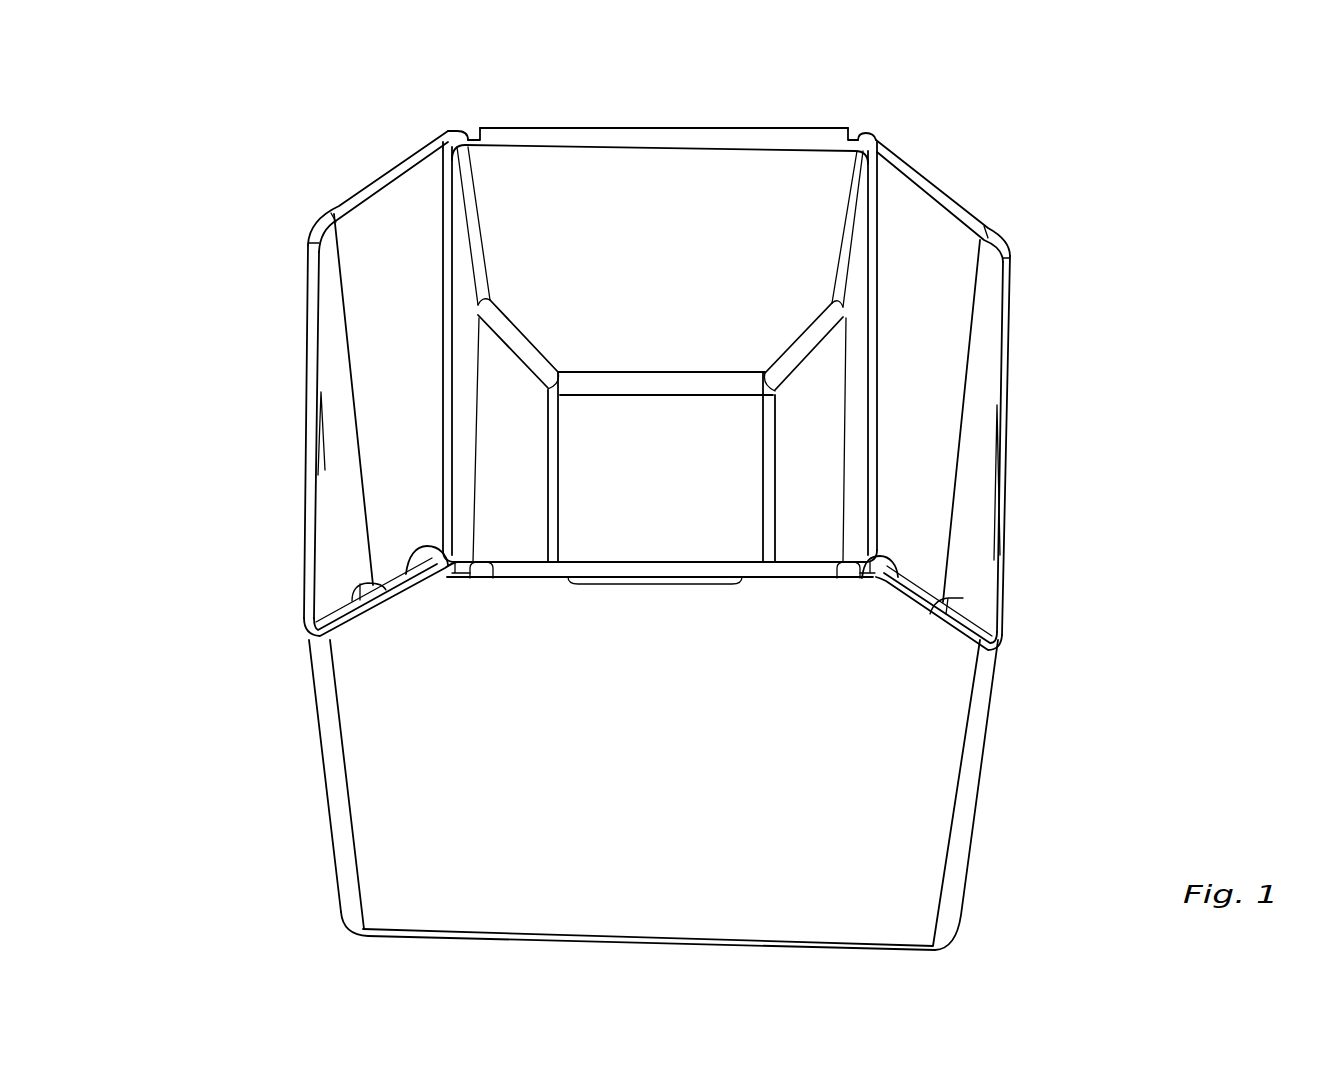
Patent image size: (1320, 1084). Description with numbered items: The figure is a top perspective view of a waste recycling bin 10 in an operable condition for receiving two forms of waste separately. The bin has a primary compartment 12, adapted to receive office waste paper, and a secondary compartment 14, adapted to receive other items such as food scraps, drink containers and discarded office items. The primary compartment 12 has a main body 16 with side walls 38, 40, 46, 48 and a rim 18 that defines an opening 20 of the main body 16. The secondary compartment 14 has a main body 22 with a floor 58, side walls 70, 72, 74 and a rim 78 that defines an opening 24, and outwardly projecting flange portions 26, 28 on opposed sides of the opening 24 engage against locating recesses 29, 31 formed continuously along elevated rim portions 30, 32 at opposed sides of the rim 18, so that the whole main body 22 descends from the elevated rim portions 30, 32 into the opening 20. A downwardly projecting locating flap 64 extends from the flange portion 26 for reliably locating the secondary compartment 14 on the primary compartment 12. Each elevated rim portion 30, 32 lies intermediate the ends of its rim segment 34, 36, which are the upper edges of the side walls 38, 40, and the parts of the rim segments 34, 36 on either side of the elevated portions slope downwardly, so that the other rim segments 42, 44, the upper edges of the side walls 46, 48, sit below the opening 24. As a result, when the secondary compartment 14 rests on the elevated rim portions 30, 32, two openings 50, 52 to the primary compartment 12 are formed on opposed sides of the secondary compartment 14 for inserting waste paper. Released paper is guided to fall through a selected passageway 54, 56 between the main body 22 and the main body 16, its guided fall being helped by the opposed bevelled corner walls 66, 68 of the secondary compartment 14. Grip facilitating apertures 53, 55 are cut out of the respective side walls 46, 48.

The waste recycling bin 10 is at (1126, 795).
The primary compartment 12 is at (706, 795).
The main body 16 is at (960, 868).
The secondary compartment 14 is at (660, 325).
The main body 22 is at (852, 213).
The rim 18 is at (980, 219).
The rim segment 34 is at (378, 190).
The opening 20 is at (994, 374).
The opening 52 is at (944, 236).
The opening 24 is at (648, 204).
The flange portion 26 is at (565, 135).
The flange portion 28 is at (560, 580).
The locating recess 29 is at (479, 131).
The elevated rim portion 30 is at (460, 128).
The locating recess 31 is at (495, 580).
The elevated rim portion 32 is at (403, 585).
The rim segment 36 is at (343, 619).
The side wall 38 is at (376, 232).
The side wall 40 is at (423, 812).
The rim segment 42 is at (308, 380).
The rim segment 44 is at (1006, 390).
The side wall 46 is at (331, 563).
The side wall 48 is at (983, 588).
The opening 50 is at (362, 315).
The grip facilitating aperture 53 is at (326, 470).
The passageway 54 is at (430, 289).
The grip facilitating aperture 55 is at (1000, 500).
The passageway 56 is at (890, 273).
The floor 58 is at (630, 450).
The locating flap 64 is at (655, 585).
The bevelled corner wall 66 is at (520, 390).
The bevelled corner wall 68 is at (808, 402).
The side wall 70 is at (458, 378).
The side wall 72 is at (858, 366).
The side wall 74 is at (713, 180).
The rim 78 is at (877, 164).